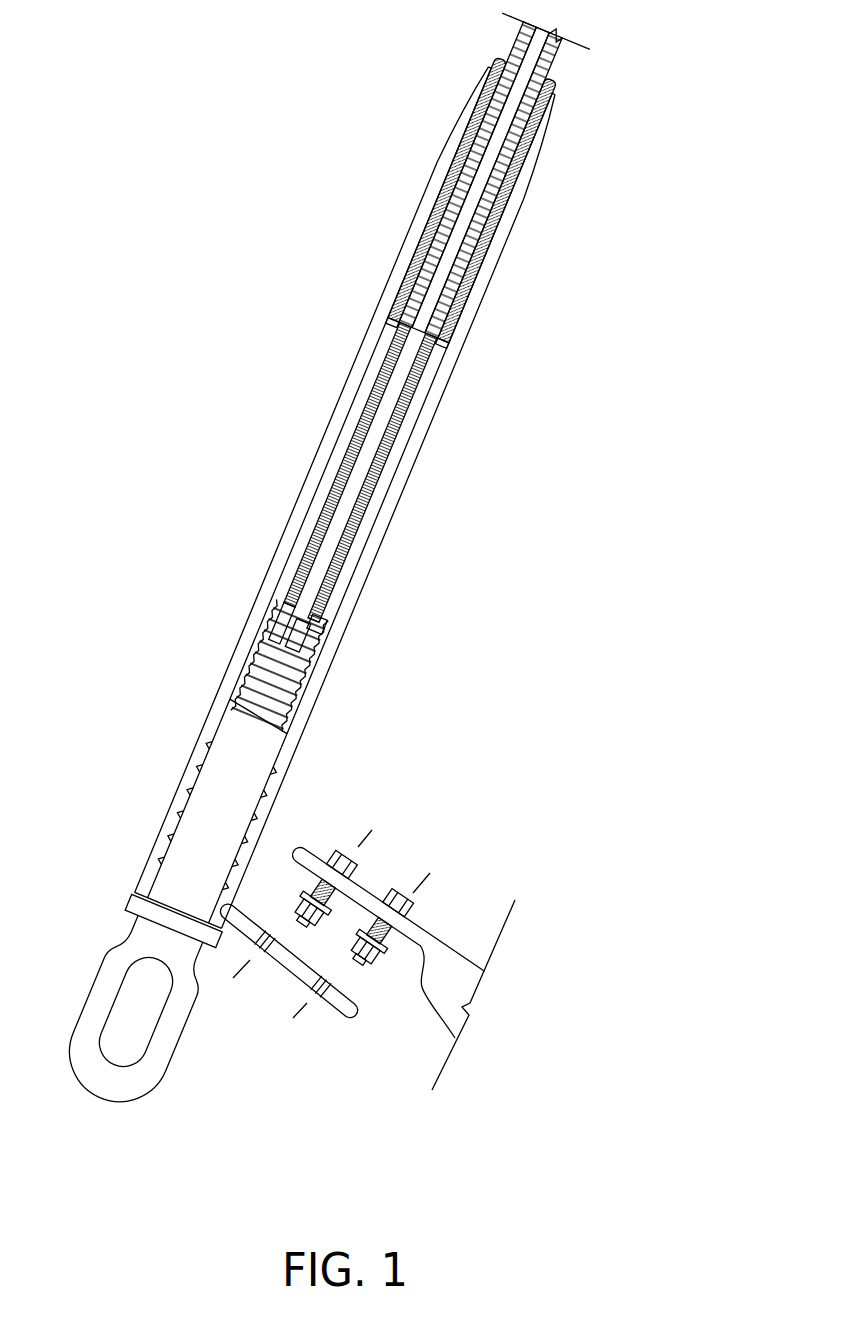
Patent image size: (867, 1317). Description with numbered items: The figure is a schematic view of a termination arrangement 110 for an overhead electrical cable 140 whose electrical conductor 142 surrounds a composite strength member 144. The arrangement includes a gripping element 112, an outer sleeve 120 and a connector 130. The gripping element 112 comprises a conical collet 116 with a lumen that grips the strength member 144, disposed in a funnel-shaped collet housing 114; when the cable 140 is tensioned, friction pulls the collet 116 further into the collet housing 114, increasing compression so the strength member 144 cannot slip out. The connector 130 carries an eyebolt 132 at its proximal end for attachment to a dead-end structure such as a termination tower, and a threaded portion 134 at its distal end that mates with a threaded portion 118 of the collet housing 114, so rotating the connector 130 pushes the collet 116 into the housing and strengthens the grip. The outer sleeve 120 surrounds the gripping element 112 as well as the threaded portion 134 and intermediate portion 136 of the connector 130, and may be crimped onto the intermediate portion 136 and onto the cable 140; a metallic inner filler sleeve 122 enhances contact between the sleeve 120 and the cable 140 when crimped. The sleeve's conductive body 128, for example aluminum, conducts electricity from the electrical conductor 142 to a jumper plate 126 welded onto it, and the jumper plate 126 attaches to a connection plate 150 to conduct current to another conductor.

The termination arrangement 110 is at (343, 578).
The gripping element 112 is at (446, 371).
The collet housing 114 is at (412, 418).
The collet 116 is at (363, 515).
The threaded portion 118 is at (263, 650).
The outer sleeve 120 is at (376, 570).
The inner filler sleeve 122 is at (482, 262).
The jumper plate 126 is at (290, 972).
The conductive body 128 is at (342, 613).
The connector 130 is at (162, 838).
The eyebolt 132 is at (105, 977).
The threaded portion 134 is at (292, 675).
The intermediate portion 136 is at (260, 773).
The overhead electrical cable 140 is at (572, 74).
The electrical conductor 142 is at (530, 113).
The composite strength member 144 is at (497, 157).
The connection plate 150 is at (440, 938).